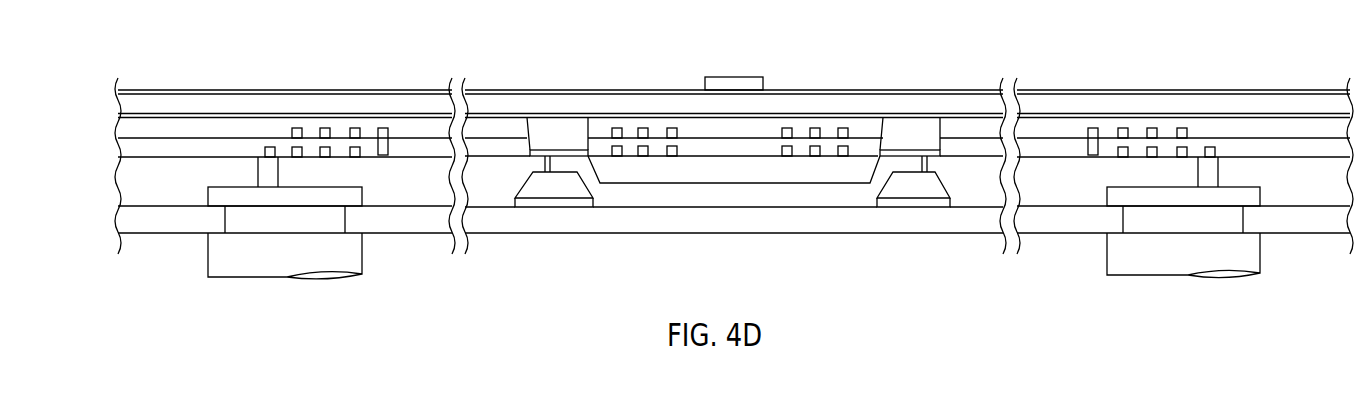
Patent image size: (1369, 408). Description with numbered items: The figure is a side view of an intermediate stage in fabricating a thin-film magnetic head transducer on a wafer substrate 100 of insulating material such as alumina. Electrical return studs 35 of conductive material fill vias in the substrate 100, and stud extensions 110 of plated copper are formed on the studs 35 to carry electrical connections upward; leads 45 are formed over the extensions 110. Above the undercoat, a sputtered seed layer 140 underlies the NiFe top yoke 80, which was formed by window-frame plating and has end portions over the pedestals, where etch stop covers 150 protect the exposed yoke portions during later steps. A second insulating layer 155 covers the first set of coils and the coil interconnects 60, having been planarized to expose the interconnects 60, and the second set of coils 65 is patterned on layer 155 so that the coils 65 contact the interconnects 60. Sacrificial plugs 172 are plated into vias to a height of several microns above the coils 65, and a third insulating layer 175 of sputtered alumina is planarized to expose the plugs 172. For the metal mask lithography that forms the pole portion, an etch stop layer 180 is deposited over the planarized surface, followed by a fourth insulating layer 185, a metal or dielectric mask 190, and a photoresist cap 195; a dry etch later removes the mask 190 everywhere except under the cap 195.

The electrical return stud 35 is at (237, 265).
The lead 45 is at (220, 197).
The coil interconnect 60 is at (383, 140).
The second set of coils 65 is at (293, 130).
The top yoke 80 is at (647, 190).
The wafer substrate 100 is at (733, 275).
The stud extension 110 is at (335, 218).
The seed layer 140 is at (772, 203).
The etch stop cover 150 is at (555, 152).
The second insulating layer 155 is at (201, 147).
The sacrificial plug 172 is at (538, 132).
The third insulating layer 175 is at (242, 128).
The etch stop layer 180 is at (165, 117).
The fourth insulating layer 185 is at (408, 105).
The mask 190 is at (334, 90).
The photoresist cap 195 is at (730, 77).